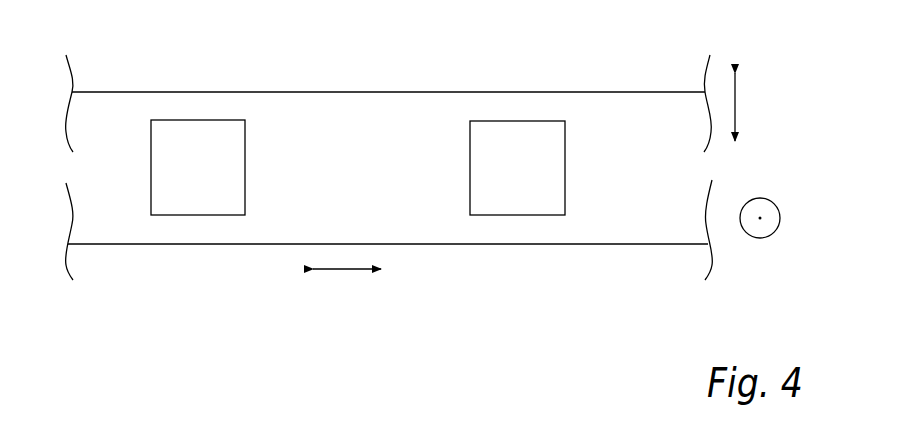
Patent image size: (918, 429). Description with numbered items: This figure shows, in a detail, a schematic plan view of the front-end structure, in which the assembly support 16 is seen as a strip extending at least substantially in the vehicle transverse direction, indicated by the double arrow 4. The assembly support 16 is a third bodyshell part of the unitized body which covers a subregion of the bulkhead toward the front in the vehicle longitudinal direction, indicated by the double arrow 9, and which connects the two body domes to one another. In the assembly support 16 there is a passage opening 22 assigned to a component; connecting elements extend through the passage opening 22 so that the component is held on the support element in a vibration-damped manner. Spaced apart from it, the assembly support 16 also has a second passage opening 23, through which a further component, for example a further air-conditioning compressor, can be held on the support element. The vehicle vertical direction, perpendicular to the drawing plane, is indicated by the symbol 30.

The assembly support 16 is at (629, 90).
The passage opening 22 is at (519, 146).
The second passage opening 23 is at (209, 146).
The double arrow 9 is at (735, 107).
The double arrow 30 is at (780, 217).
The double arrow 4 is at (348, 270).